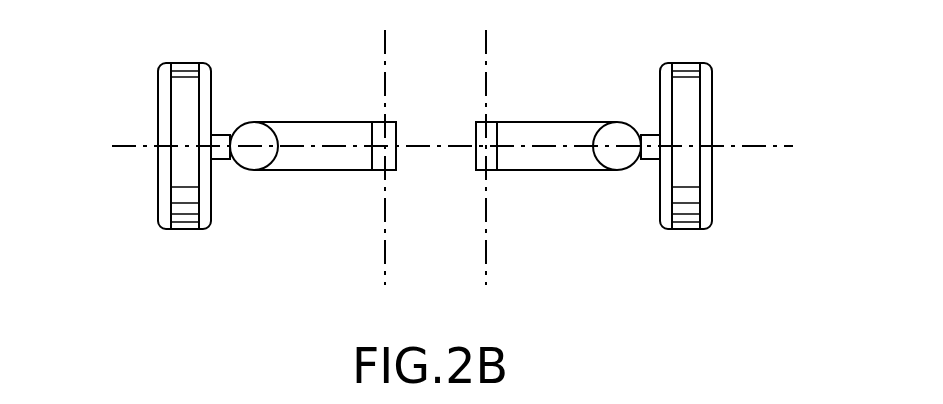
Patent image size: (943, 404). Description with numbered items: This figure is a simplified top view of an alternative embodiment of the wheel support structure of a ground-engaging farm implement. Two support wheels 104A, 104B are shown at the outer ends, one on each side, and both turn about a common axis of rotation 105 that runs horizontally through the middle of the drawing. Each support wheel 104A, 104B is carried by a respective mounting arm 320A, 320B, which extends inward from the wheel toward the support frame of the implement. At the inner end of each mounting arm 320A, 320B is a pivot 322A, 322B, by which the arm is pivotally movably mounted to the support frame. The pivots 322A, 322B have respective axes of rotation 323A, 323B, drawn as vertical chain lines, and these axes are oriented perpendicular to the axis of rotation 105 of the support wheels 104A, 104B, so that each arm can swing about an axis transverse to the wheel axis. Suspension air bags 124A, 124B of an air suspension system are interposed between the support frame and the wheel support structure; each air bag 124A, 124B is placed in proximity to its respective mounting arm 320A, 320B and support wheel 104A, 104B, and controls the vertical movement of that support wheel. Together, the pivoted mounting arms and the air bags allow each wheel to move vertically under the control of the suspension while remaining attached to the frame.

The support wheel 104A is at (688, 103).
The support wheel 104B is at (182, 104).
The suspension air bag 124A is at (615, 133).
The suspension air bag 124B is at (255, 135).
The mounting arm 320A is at (568, 150).
The mounting arm 320B is at (303, 154).
The pivot 322A is at (498, 135).
The pivot 322B is at (372, 133).
The axis of rotation 323A is at (487, 272).
The axis of rotation 323B is at (384, 272).
The axis of rotation of the support wheels 105 is at (770, 148).